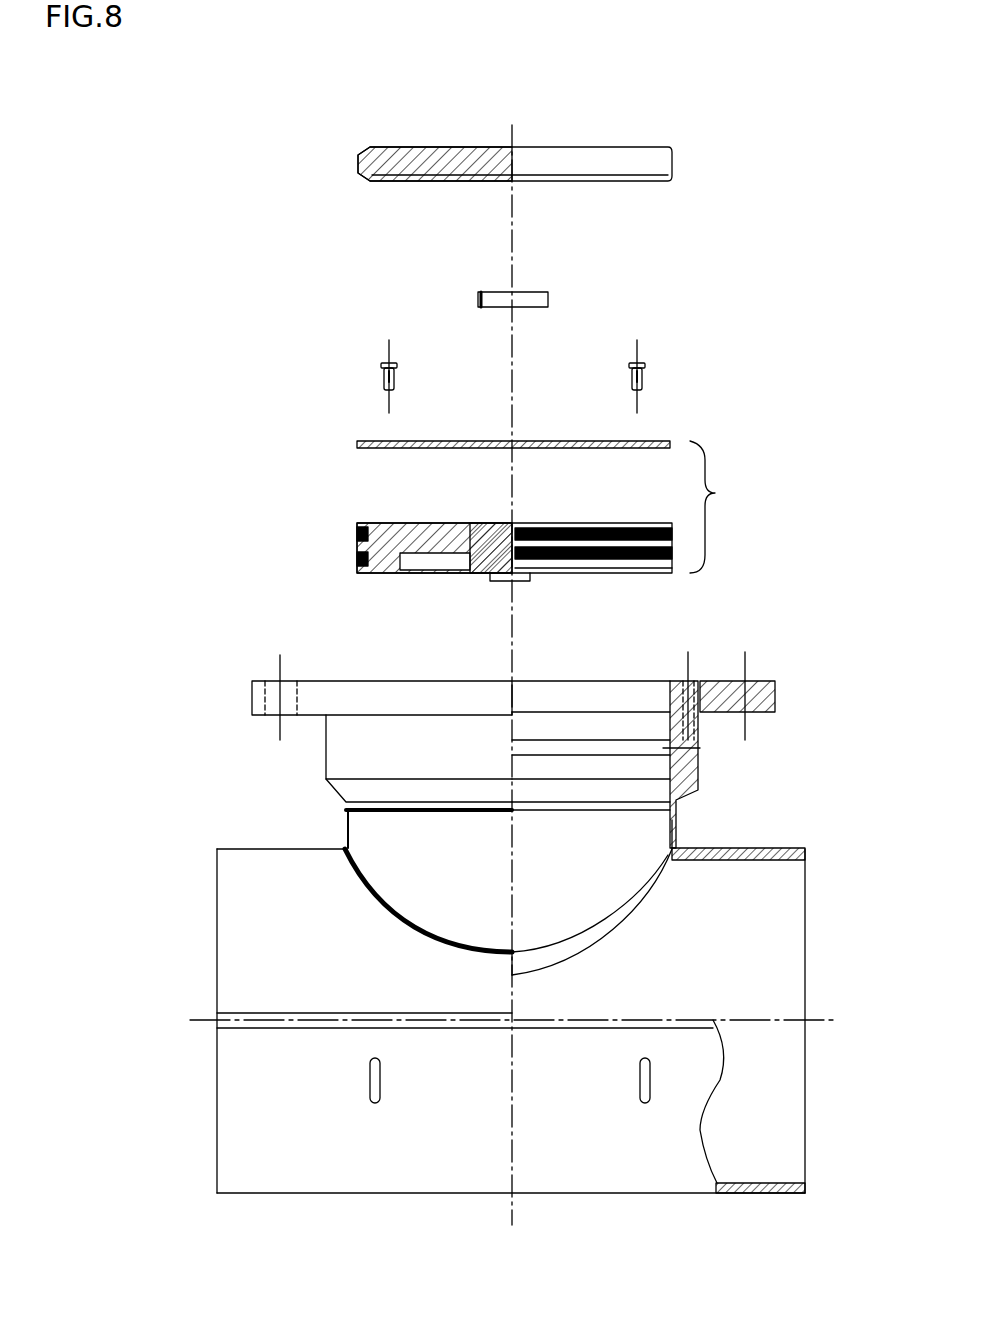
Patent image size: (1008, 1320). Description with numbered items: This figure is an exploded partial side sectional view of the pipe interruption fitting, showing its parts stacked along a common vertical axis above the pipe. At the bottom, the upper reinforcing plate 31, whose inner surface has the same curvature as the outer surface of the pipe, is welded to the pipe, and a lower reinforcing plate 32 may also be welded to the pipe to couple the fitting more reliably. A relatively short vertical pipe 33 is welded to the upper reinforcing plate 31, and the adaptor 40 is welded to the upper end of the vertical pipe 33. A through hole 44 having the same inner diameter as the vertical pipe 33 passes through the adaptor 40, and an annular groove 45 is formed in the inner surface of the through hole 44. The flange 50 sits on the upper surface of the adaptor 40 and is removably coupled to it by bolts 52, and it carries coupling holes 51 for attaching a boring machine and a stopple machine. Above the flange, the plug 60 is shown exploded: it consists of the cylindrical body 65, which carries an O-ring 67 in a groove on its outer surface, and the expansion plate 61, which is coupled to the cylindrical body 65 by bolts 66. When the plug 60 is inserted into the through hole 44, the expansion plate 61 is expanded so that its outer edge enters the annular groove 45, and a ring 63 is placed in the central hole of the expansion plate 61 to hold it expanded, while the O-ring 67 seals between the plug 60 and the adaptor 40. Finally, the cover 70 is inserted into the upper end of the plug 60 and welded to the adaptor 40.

The cover 70 is at (640, 147).
The ring 63 is at (552, 297).
The bolts 66 is at (645, 378).
The expansion plate 61 is at (358, 441).
The cylindrical body 65 is at (447, 504).
The O-ring 67 is at (357, 543).
The plug 60 is at (721, 507).
The flange 50 is at (434, 646).
The coupling holes 51 is at (273, 692).
The bolts 52 is at (697, 680).
The through hole 44 is at (660, 725).
The annular groove 45 is at (663, 748).
The adaptor 40 is at (552, 726).
The vertical pipe 33 is at (676, 825).
The upper reinforcing plate 31 is at (758, 848).
The lower reinforcing plate 32 is at (785, 1193).